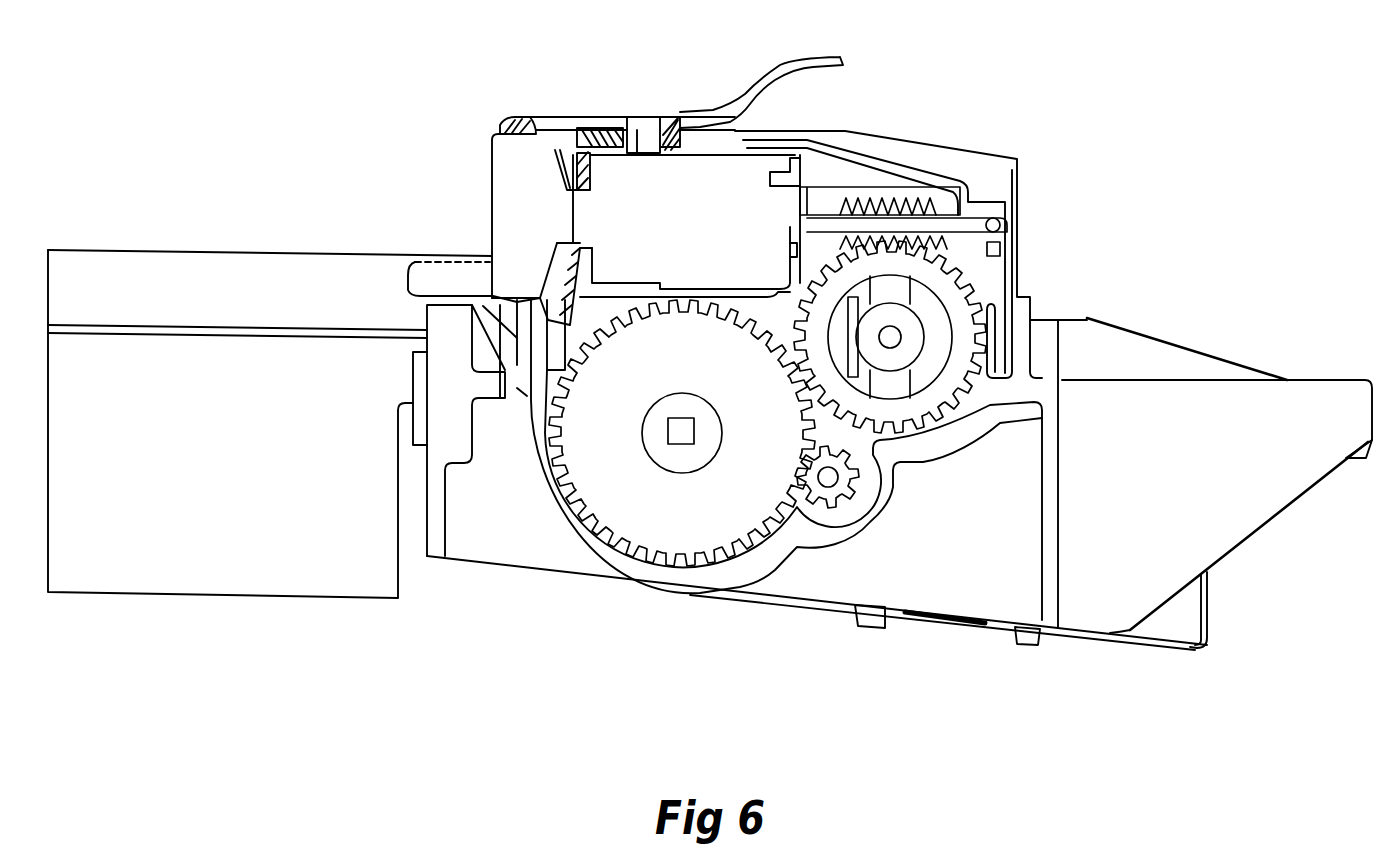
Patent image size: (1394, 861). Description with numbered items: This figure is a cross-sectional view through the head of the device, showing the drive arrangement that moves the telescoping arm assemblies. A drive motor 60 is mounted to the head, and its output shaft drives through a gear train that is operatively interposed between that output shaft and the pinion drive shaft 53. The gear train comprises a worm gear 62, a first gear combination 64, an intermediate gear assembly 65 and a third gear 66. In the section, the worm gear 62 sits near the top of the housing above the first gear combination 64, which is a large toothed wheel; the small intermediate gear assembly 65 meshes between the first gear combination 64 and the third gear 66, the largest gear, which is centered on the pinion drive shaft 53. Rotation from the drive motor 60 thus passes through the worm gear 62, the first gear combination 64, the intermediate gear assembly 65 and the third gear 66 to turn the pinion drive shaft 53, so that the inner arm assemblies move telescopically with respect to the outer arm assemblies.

The pinion drive shaft 53 is at (672, 431).
The drive motor 60 is at (727, 171).
The worm gear 62 is at (914, 220).
The first gear combination 64 is at (975, 308).
The intermediate gear assembly 65 is at (842, 487).
The third gear 66 is at (690, 535).